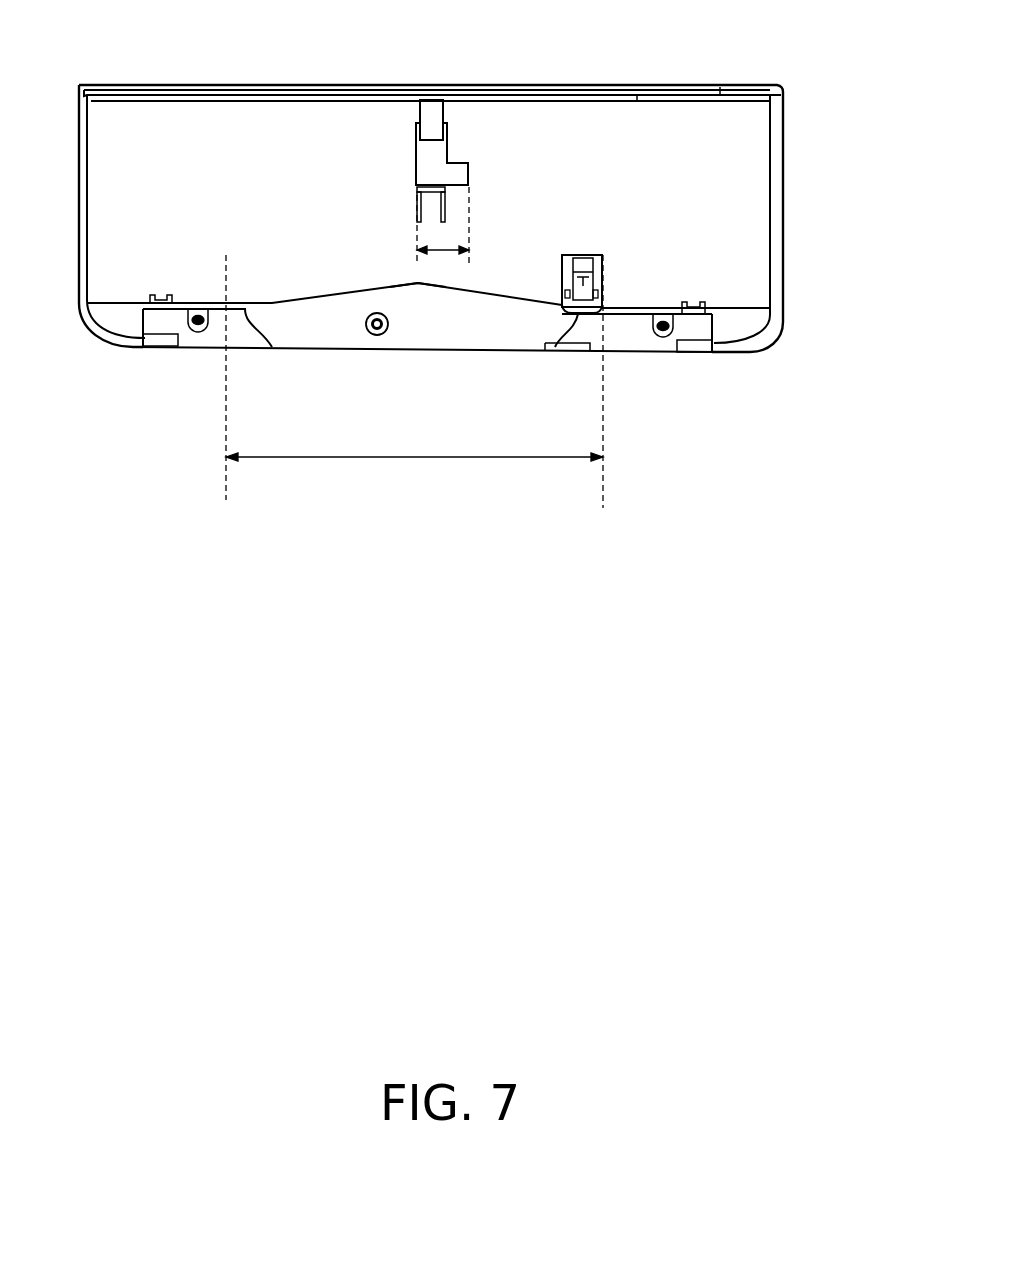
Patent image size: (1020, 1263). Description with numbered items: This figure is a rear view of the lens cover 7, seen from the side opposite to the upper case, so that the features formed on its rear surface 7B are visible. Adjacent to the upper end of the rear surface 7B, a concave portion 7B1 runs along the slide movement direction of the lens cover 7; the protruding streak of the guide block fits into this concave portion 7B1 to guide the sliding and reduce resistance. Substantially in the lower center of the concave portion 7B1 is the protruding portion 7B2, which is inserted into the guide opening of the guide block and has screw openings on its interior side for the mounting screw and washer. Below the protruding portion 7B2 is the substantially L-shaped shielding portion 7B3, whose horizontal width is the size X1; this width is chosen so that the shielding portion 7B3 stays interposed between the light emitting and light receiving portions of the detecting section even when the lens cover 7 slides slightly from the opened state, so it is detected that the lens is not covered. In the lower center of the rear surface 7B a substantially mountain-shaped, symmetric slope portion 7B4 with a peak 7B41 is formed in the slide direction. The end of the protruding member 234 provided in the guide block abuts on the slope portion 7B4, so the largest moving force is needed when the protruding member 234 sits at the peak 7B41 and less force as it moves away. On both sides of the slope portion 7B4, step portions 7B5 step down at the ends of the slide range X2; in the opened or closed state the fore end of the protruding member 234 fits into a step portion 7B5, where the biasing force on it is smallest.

The lens cover 7 is at (745, 88).
The rear surface 7B is at (748, 154).
The concave portion 7B1 is at (637, 98).
The protruding portion 7B2 is at (432, 98).
The shielding portion 7B3 is at (437, 155).
The slope portion 7B4 is at (430, 302).
The peak 7B41 is at (418, 283).
The step portion 7B5 is at (272, 347).
The protruding member 234 is at (600, 278).
The size X1 is at (440, 250).
The slide range X2 is at (415, 460).